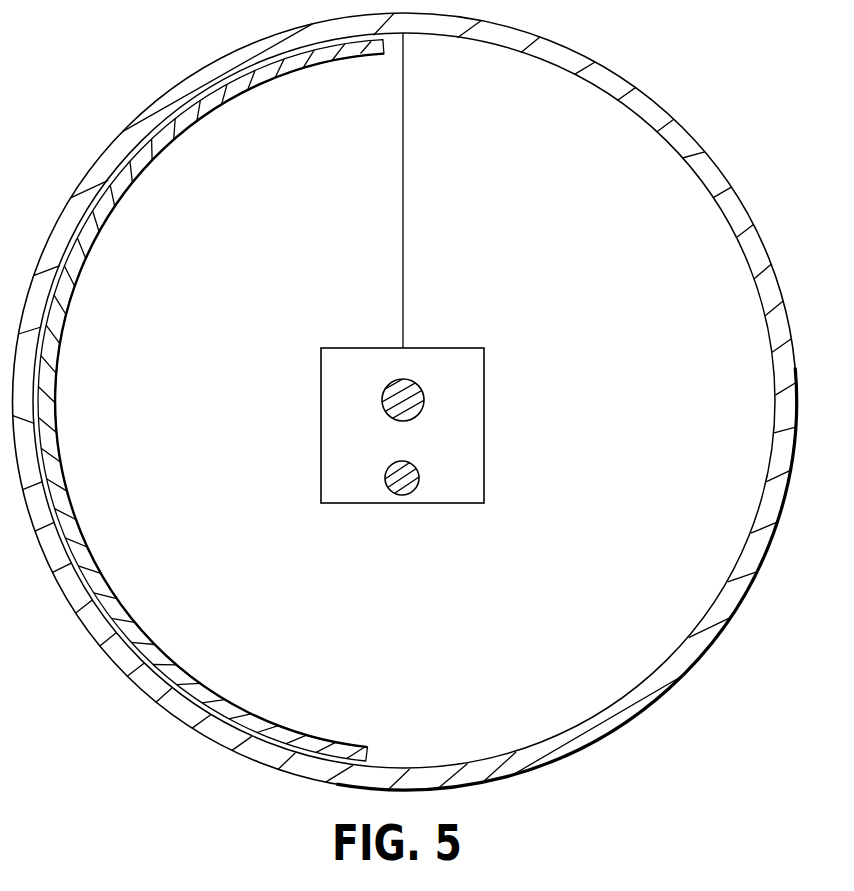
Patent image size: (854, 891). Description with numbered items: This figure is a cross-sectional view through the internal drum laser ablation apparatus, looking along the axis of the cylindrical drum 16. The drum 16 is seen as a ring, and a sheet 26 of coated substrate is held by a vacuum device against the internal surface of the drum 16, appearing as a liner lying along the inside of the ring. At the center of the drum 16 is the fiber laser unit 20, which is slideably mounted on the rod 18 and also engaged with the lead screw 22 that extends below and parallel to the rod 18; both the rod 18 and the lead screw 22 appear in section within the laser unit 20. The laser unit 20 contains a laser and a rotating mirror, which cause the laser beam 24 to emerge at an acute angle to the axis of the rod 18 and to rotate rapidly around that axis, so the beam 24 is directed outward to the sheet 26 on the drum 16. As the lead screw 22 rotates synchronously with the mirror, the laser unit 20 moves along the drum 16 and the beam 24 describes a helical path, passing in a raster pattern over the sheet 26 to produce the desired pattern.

The cylindrical drum 16 is at (198, 78).
The sheet of coated substrate 26 is at (175, 127).
The laser beam 24 is at (405, 152).
The fiber laser unit 20 is at (350, 365).
The rod 18 is at (411, 388).
The lead screw 22 is at (412, 472).